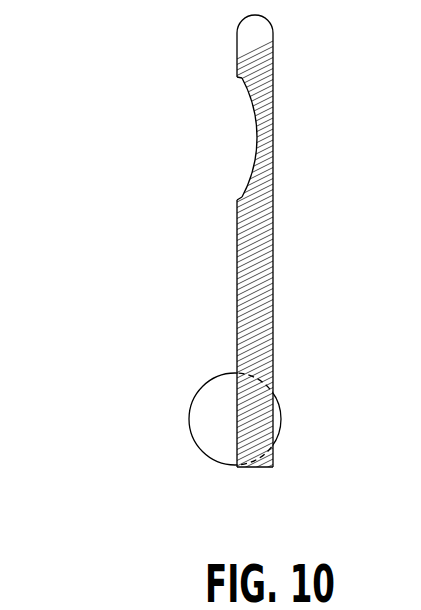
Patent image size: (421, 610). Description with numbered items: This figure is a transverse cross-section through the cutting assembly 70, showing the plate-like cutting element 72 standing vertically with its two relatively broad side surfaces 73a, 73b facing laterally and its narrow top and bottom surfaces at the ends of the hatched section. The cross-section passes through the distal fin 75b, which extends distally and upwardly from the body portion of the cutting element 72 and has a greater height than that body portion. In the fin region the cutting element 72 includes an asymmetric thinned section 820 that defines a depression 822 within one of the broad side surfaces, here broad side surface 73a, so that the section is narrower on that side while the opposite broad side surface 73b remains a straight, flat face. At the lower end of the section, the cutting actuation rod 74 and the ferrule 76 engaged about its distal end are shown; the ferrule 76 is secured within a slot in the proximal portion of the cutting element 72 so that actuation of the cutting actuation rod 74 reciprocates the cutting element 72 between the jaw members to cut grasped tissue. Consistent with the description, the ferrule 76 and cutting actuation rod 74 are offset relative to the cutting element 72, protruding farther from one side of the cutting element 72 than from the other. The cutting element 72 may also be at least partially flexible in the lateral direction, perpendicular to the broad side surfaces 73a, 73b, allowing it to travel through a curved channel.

The cutting assembly 70 is at (125, 197).
The cutting element 72 is at (254, 257).
The broad side surface 73a is at (230, 307).
The broad side surface 73b is at (280, 305).
The cutting actuation rod 74 is at (189, 418).
The ferrule 76 is at (235, 419).
The distal fin 75b is at (262, 40).
The asymmetric thinned section 820 is at (259, 138).
The depression 822 is at (256, 138).